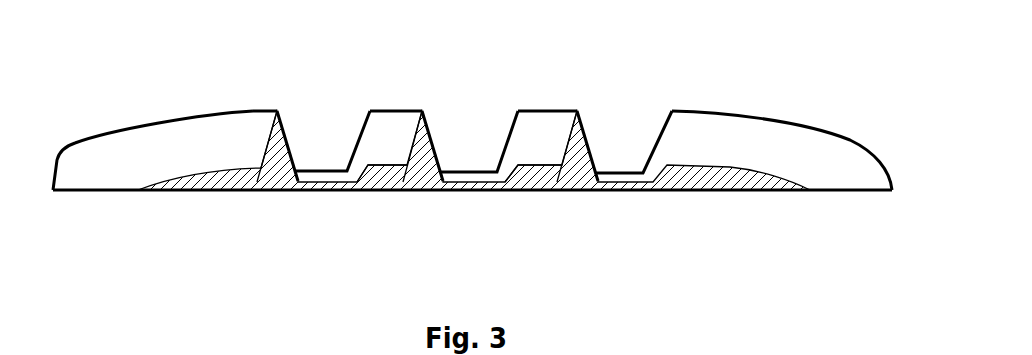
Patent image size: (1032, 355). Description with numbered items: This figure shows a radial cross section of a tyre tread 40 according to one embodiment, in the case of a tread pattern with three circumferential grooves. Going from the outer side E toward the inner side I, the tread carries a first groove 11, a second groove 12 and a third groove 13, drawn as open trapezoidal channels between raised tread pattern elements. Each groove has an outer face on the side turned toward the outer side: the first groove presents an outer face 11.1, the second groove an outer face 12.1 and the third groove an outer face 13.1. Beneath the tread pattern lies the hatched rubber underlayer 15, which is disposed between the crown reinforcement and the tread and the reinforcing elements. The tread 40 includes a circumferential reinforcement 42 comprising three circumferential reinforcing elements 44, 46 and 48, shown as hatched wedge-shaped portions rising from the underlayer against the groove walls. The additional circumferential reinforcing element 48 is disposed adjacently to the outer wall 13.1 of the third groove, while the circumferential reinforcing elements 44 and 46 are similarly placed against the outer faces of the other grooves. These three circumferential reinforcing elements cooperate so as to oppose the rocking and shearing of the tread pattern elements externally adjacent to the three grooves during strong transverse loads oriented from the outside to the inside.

The tread 40 is at (482, 95).
The first groove 11 is at (250, 108).
The outer face of first groove 11.1 is at (318, 130).
The second groove 12 is at (407, 108).
The outer face of second groove 12.1 is at (462, 135).
The third groove 13 is at (574, 108).
The outer face of third groove 13.1 is at (566, 122).
The rubber underlayer 15 is at (474, 187).
The circumferential reinforcement 42 is at (445, 235).
The circumferential reinforcing element 44 is at (420, 158).
The circumferential reinforcing element 46 is at (270, 163).
The additional circumferential reinforcing element 48 is at (585, 172).
The outer side E is at (108, 103).
The inner side I is at (857, 105).